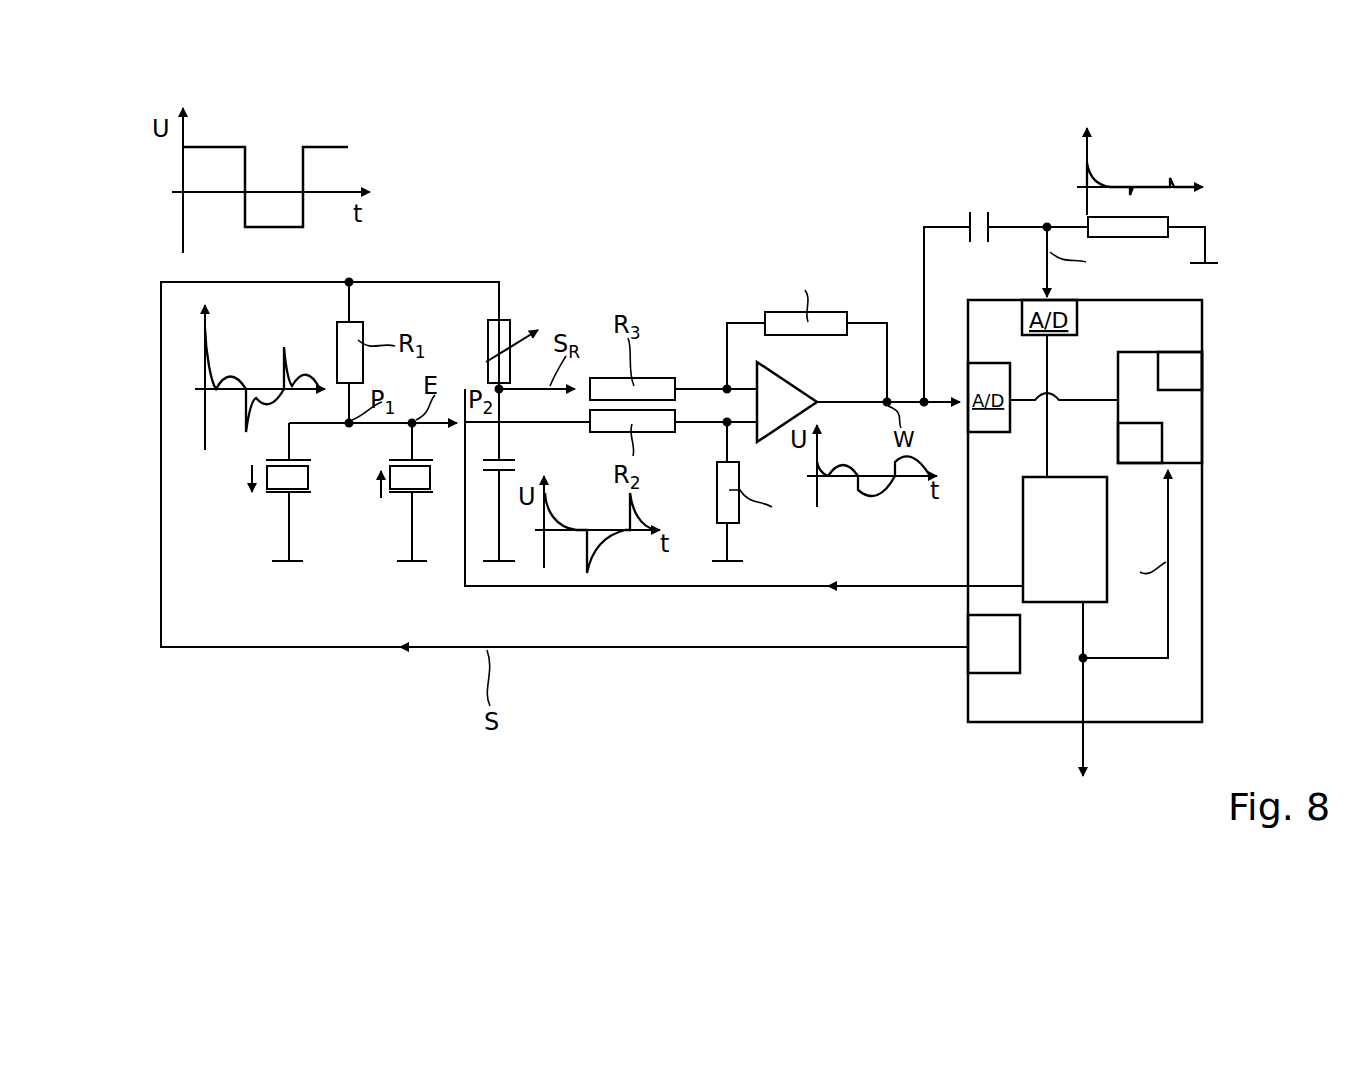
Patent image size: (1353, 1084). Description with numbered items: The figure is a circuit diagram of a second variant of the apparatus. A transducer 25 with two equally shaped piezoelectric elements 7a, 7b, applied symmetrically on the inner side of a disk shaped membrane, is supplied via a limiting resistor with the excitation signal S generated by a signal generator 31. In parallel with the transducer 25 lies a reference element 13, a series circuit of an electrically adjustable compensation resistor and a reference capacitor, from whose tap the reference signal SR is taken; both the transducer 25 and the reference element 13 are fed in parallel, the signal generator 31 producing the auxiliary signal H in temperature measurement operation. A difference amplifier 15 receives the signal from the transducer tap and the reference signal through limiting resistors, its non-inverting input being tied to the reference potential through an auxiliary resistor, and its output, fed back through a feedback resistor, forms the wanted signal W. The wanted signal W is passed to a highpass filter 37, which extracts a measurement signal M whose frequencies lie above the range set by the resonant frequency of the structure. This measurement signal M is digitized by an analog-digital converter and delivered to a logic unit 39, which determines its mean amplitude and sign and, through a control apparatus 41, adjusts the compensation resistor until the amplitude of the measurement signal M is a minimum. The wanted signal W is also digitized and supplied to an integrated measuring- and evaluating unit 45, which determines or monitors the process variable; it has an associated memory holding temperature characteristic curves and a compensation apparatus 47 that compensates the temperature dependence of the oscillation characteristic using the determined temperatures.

The piezoelectric element 7a is at (300, 477).
The piezoelectric element 7b is at (425, 477).
The reference element 13 is at (512, 286).
The difference amplifier 15 is at (712, 348).
The transducer 25 is at (272, 446).
The signal generator 31 is at (994, 644).
The highpass filter 37 is at (980, 200).
The logic unit 39 is at (1056, 604).
The control apparatus 41 is at (1065, 539).
The measuring- and evaluating unit 45 is at (1160, 407).
The compensation apparatus 47 is at (1140, 443).